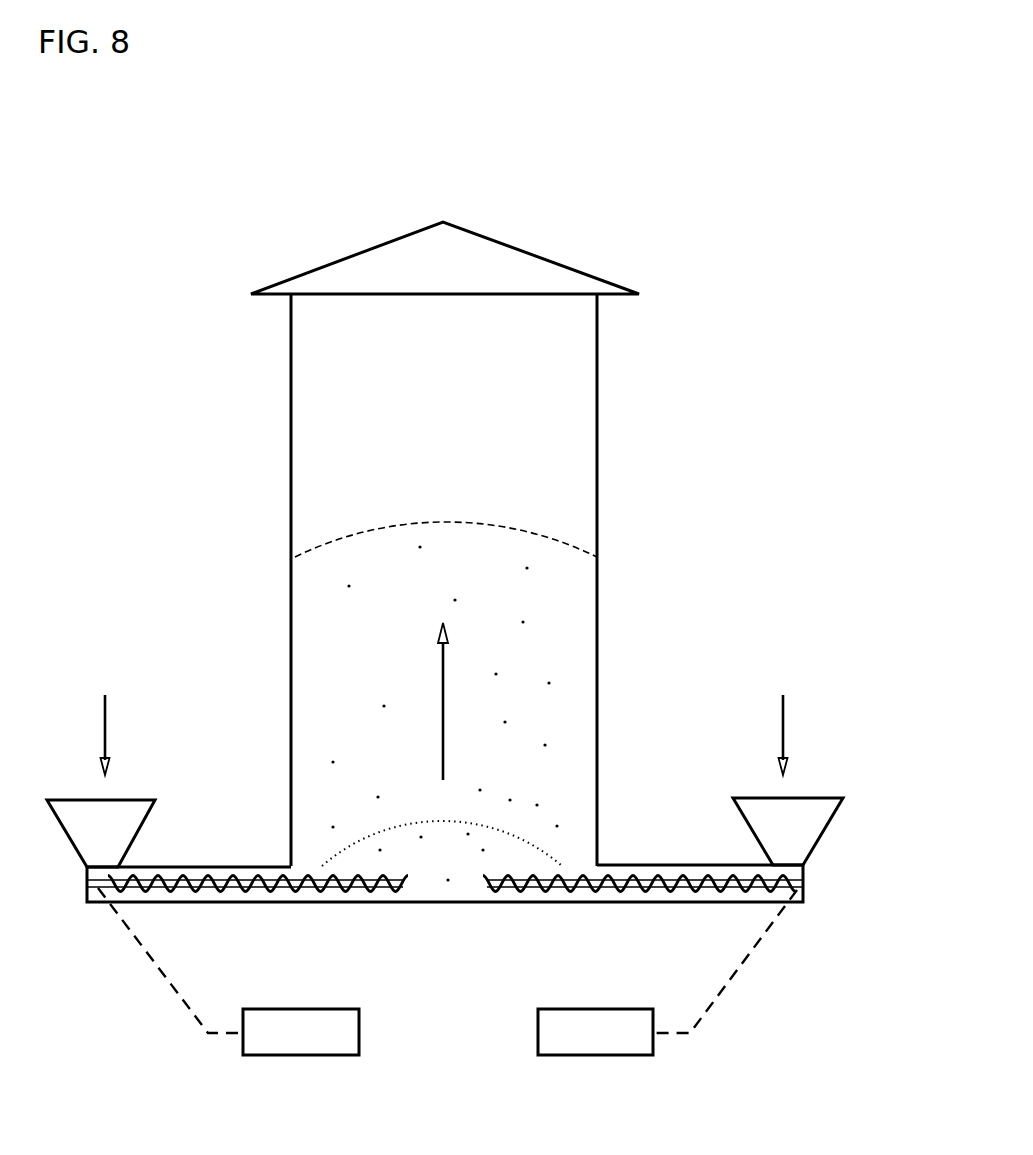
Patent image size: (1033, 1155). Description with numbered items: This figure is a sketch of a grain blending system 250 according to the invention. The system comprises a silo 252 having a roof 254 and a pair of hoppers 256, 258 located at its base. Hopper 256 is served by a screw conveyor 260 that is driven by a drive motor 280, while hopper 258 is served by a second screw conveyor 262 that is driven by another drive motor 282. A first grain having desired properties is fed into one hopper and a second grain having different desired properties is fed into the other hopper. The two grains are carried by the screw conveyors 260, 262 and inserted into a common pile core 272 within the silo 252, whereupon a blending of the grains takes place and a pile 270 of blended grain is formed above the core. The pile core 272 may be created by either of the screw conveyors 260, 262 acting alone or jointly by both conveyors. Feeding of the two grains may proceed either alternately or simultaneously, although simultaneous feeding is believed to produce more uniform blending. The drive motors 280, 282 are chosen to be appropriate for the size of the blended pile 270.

The grain blending system 250 is at (562, 223).
The silo 252 is at (280, 473).
The roof 254 is at (282, 273).
The hopper 256 is at (57, 842).
The hopper 258 is at (833, 833).
The screw conveyor 260 is at (222, 875).
The second screw conveyor 262 is at (667, 873).
The pile 270 is at (350, 657).
The pile core 272 is at (437, 878).
The drive motor 280 is at (299, 1060).
The drive motor 282 is at (596, 1060).